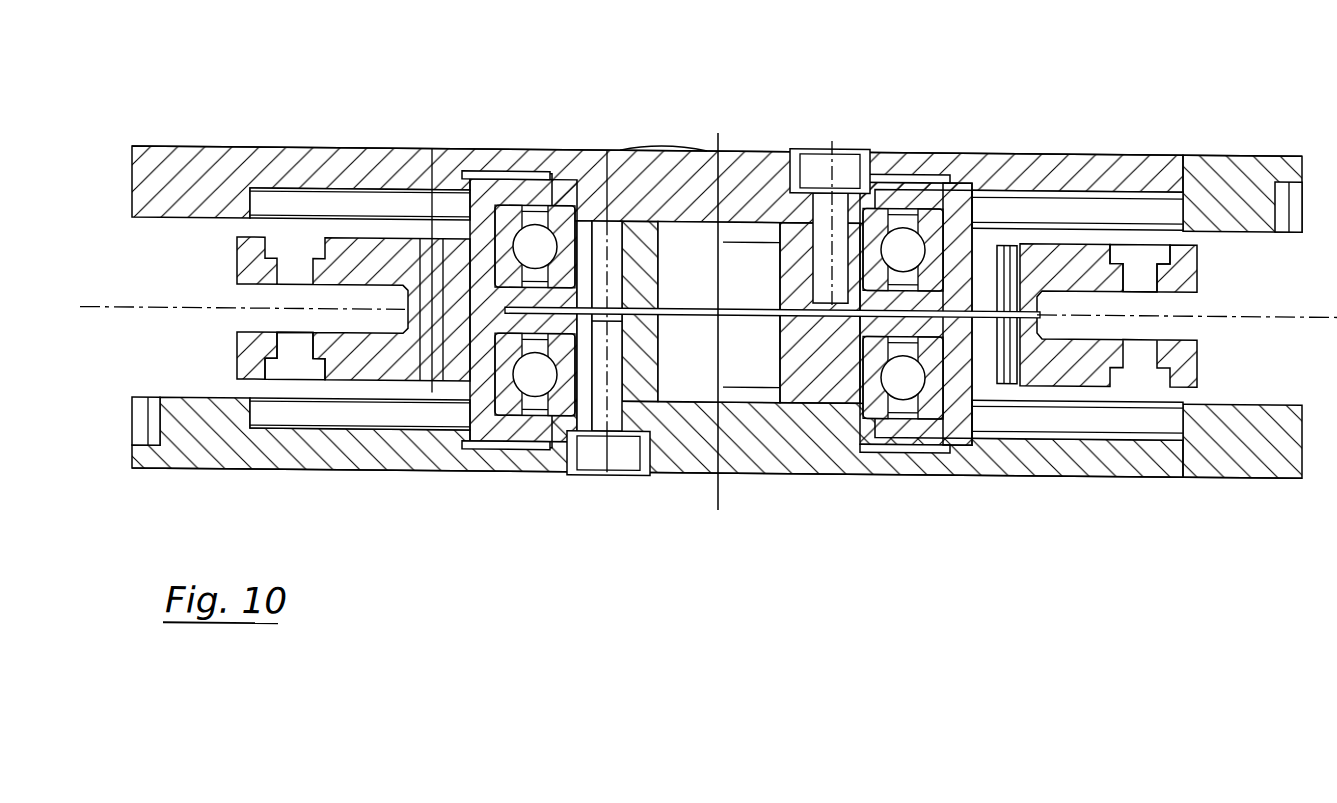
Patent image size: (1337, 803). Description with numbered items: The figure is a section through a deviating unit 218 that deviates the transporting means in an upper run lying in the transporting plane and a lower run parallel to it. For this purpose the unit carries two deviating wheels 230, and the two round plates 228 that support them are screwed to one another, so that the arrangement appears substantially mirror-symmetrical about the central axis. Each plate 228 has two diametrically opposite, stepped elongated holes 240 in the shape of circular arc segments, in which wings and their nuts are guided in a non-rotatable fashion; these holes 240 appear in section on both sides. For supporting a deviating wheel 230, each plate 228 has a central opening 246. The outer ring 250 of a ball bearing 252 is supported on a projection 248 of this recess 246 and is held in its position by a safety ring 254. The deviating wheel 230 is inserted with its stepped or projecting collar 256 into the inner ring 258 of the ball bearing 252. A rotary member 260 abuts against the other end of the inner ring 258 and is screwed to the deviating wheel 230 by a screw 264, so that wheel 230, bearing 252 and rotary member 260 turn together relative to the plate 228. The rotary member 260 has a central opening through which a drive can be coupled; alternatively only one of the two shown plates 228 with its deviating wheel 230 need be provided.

The deviating unit 218 is at (226, 96).
The round plate 228 is at (360, 368).
The deviating wheel 230 is at (1213, 178).
The elongated hole 240 is at (300, 352).
The central opening 246 is at (527, 292).
The projection 248 is at (1007, 232).
The outer ring 250 is at (942, 290).
The ball bearing 252 is at (903, 240).
The safety ring 254 is at (942, 193).
The projecting collar 256 is at (885, 200).
The inner ring 258 is at (657, 142).
The rotary member 260 is at (636, 245).
The screw 264 is at (829, 171).